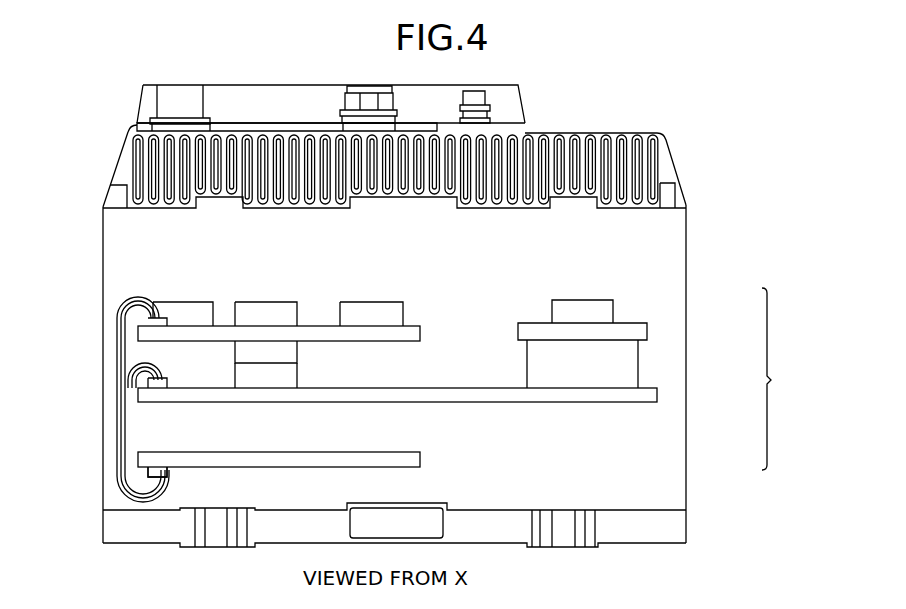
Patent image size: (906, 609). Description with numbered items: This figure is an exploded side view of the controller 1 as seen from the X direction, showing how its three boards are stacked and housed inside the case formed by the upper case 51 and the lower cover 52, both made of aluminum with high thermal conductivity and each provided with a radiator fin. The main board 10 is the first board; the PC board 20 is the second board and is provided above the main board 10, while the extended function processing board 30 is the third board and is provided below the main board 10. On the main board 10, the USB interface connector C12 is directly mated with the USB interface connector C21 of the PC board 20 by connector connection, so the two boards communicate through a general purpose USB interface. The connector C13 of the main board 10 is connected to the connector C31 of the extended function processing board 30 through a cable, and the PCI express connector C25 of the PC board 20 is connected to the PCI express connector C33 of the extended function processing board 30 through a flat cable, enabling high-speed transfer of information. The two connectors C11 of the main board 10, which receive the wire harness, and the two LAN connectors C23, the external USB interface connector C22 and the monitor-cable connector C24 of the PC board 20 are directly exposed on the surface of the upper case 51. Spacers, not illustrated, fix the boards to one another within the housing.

The controller 1 is at (775, 379).
The main board 10 is at (656, 392).
The PC board 20 is at (420, 334).
The extended function processing board 30 is at (421, 461).
The upper case 51 is at (678, 164).
The lower cover 52 is at (682, 521).
The connectors C11 is at (607, 313).
The USB interface connector C12 is at (299, 376).
The connector C13 is at (140, 322).
The USB interface connector C21 is at (299, 352).
The USB interface connector C22 is at (360, 301).
The connectors C23 is at (249, 301).
The connector C24 is at (181, 301).
The connector C25 is at (168, 386).
The connector C31 is at (157, 472).
The connector C33 is at (168, 473).